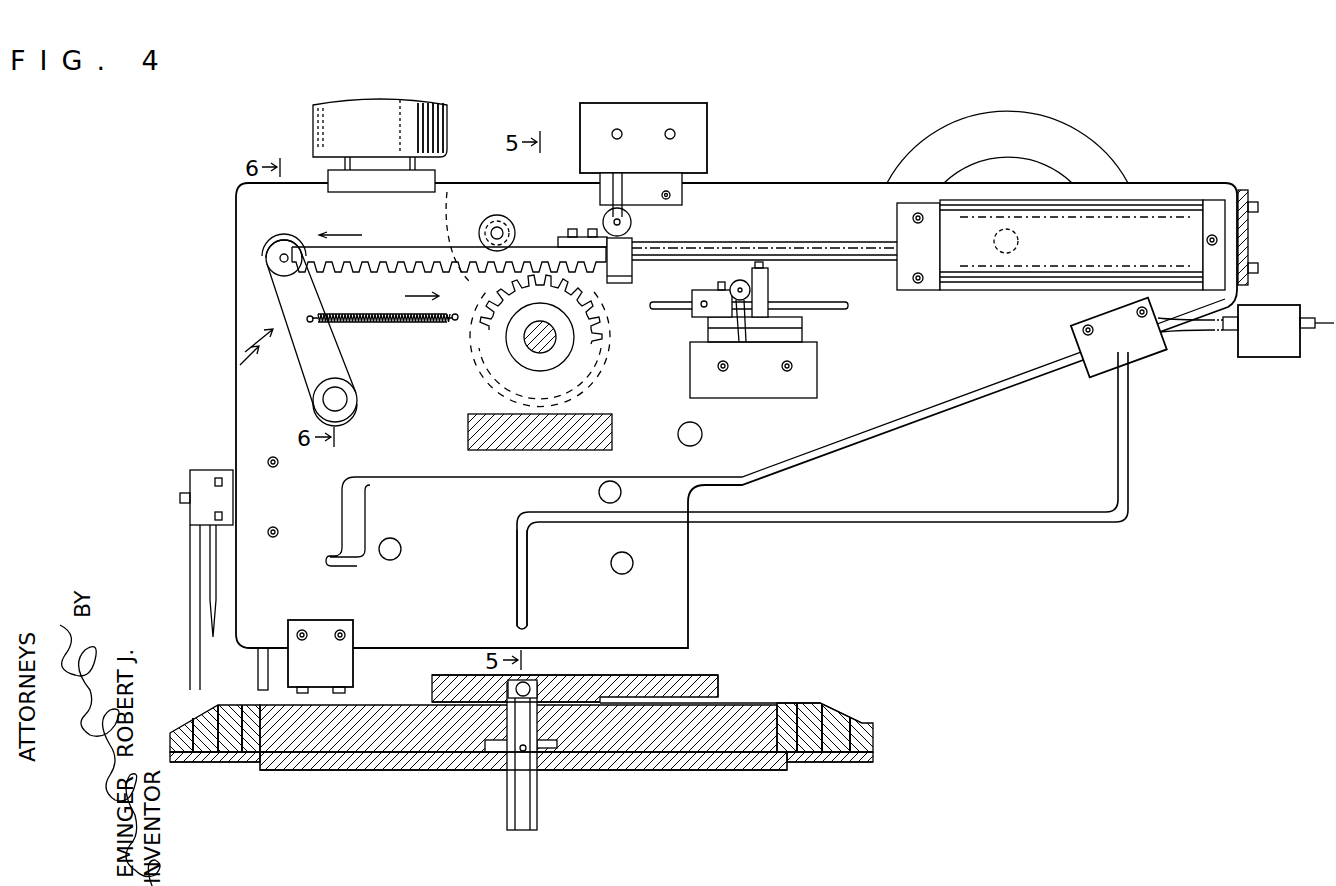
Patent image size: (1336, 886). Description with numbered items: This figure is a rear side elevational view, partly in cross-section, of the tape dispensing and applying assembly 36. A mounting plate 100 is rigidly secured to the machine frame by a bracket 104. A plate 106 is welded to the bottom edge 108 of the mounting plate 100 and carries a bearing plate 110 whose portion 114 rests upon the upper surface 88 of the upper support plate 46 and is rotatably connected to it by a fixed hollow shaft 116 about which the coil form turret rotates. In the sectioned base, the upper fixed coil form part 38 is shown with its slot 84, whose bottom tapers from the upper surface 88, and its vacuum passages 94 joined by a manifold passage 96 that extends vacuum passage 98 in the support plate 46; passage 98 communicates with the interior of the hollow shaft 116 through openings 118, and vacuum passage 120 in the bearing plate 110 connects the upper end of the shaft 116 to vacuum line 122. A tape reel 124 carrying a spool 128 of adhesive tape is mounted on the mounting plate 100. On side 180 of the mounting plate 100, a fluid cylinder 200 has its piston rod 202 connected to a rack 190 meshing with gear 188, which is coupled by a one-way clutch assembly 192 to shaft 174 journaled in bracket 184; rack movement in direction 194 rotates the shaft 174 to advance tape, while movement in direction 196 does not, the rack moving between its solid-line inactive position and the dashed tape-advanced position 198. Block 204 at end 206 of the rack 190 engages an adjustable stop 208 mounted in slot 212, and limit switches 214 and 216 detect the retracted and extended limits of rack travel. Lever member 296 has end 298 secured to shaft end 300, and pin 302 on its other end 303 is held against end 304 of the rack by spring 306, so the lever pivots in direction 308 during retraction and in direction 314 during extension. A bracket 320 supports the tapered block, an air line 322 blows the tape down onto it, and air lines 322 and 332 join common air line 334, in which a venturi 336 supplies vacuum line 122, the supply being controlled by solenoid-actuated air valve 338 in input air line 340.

The tape dispensing and applying assembly 36 is at (832, 143).
The upper fixed coil form part 38 is at (844, 701).
The upper support plate 46 is at (313, 770).
The slot 84 is at (795, 703).
The upper surface of support plate 88 is at (725, 703).
The vacuum passages 94 is at (228, 755).
The manifold passage 96 is at (212, 760).
The vacuum passage 98 is at (386, 755).
The mounting plate 100 is at (947, 332).
The bracket 104 is at (1250, 238).
The plate 106 is at (614, 647).
The bottom edge of mounting plate 108 is at (432, 651).
The bearing plate 110 is at (708, 673).
The portion of bearing plate 114 is at (432, 700).
The fixed hollow shaft 116 is at (538, 822).
The openings 118 is at (500, 752).
The vacuum passage 120 is at (533, 682).
The vacuum line 122 is at (530, 579).
The tape reel 124 is at (1020, 185).
The spool of adhesive tape 128 is at (1026, 144).
The shaft 174 is at (556, 326).
The side of mounting plate 180 is at (746, 185).
The bracket 184 is at (596, 413).
The gear 188 is at (490, 345).
The rack 190 is at (406, 257).
The one-way clutch assembly 192 is at (508, 356).
The direction of rack movement 194 is at (418, 282).
The opposite direction of rack movement 196 is at (362, 214).
The tape-advanced position 198 is at (458, 223).
The fluid cylinder 200 is at (1122, 247).
The piston rod 202 is at (763, 241).
The block 204 is at (632, 274).
The end of rack 206 is at (604, 242).
The stop 208 is at (762, 282).
The slot 212 is at (820, 304).
The limit switch 214 is at (818, 360).
The limit switch 216 is at (641, 101).
The lever member 296 is at (310, 372).
The end of lever member 298 is at (318, 408).
The end of shaft 300 is at (346, 404).
The pin 302 is at (283, 238).
The other end of lever member 303 is at (270, 248).
The end of rack 304 is at (265, 260).
The spring 306 is at (352, 322).
The direction of lever pivoting 308 is at (262, 332).
The direction of lever rotation 314 is at (240, 358).
The bracket 320 is at (356, 628).
The air line 322 is at (338, 560).
The air line 332 is at (345, 488).
The common air line 334 is at (427, 487).
The venturi 336 is at (1085, 323).
The solenoid-actuated air valve 338 is at (1272, 358).
The input air line 340 is at (1196, 332).